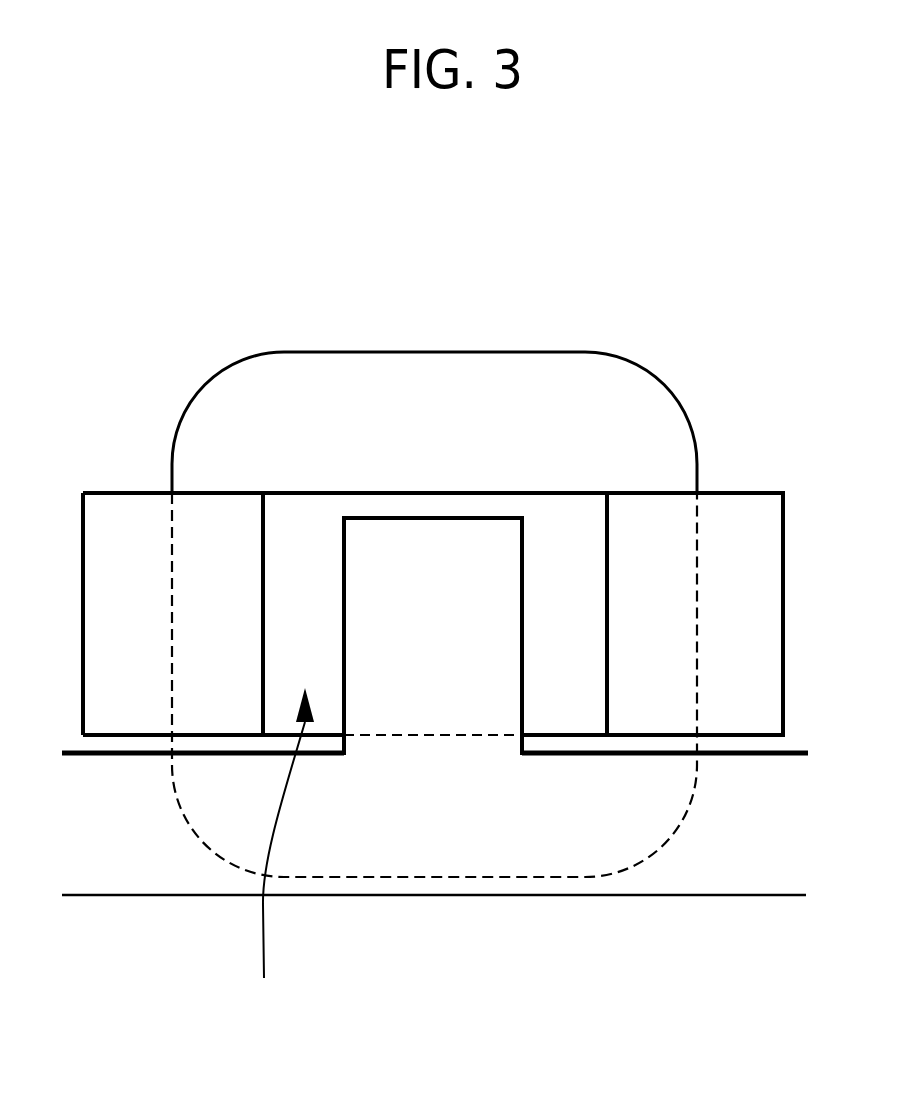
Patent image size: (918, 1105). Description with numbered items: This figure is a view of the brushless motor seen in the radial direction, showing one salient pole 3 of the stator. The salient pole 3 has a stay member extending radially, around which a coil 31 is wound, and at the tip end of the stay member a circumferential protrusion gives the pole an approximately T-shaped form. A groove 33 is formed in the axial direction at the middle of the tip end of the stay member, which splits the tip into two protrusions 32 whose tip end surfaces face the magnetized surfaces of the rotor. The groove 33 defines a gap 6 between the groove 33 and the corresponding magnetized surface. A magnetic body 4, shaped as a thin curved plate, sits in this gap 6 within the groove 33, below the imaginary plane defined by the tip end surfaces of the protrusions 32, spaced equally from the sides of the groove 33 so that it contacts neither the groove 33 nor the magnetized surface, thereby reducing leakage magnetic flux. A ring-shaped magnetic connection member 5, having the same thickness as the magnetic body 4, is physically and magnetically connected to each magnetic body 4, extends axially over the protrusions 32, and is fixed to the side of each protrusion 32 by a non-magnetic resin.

The salient pole 3 is at (370, 352).
The coil 31 is at (480, 352).
The protrusions 32 is at (120, 493).
The groove 33 is at (539, 493).
The magnetic body 4 is at (435, 518).
The magnetic connection member 5 is at (433, 897).
The gap 6 is at (287, 861).